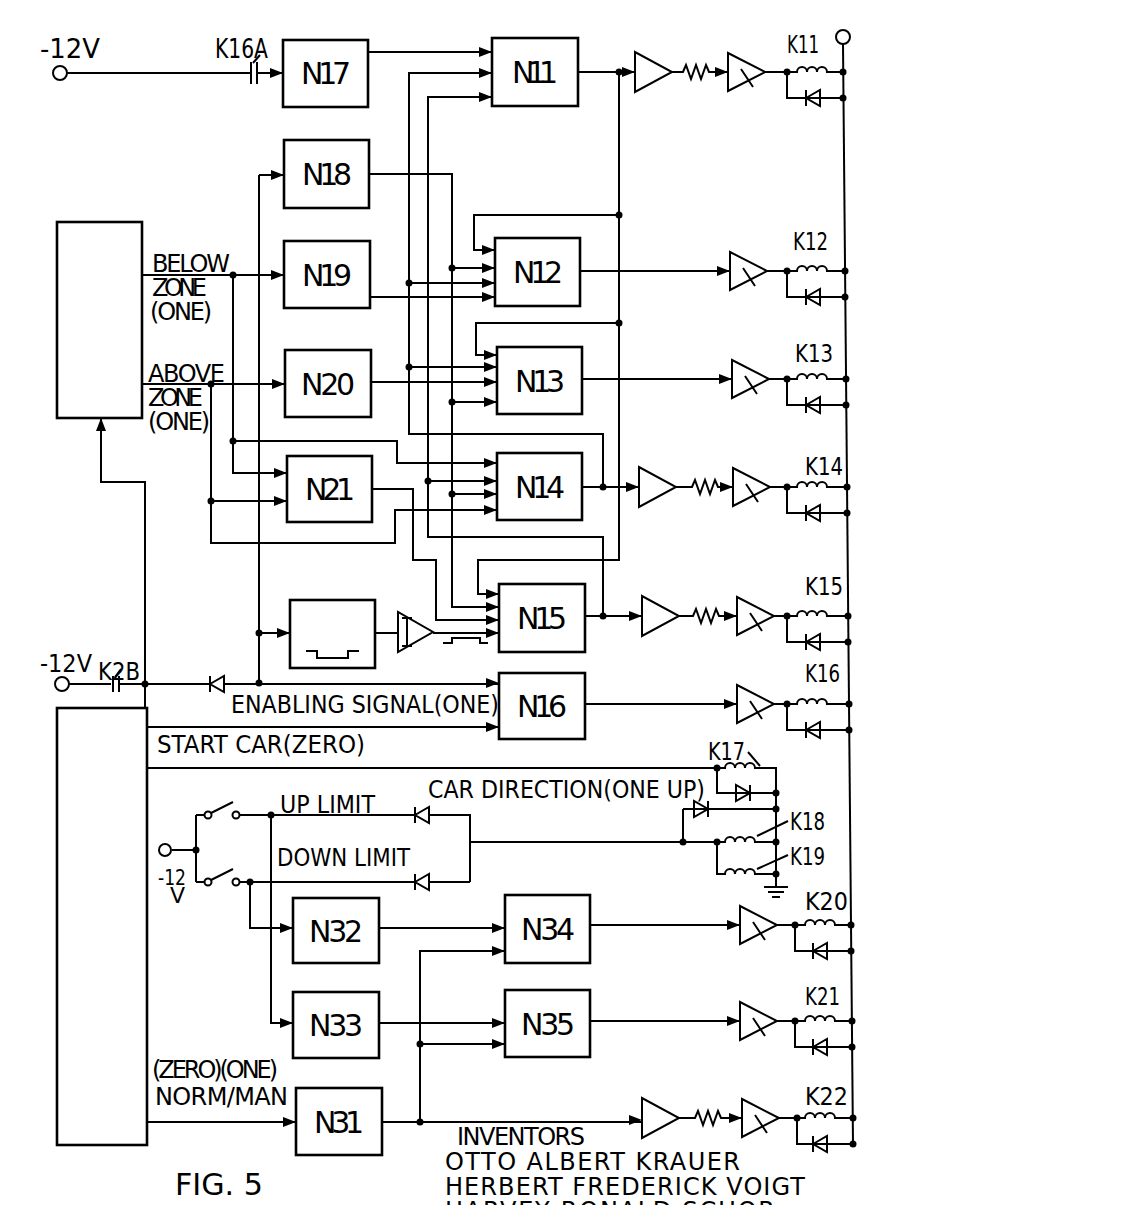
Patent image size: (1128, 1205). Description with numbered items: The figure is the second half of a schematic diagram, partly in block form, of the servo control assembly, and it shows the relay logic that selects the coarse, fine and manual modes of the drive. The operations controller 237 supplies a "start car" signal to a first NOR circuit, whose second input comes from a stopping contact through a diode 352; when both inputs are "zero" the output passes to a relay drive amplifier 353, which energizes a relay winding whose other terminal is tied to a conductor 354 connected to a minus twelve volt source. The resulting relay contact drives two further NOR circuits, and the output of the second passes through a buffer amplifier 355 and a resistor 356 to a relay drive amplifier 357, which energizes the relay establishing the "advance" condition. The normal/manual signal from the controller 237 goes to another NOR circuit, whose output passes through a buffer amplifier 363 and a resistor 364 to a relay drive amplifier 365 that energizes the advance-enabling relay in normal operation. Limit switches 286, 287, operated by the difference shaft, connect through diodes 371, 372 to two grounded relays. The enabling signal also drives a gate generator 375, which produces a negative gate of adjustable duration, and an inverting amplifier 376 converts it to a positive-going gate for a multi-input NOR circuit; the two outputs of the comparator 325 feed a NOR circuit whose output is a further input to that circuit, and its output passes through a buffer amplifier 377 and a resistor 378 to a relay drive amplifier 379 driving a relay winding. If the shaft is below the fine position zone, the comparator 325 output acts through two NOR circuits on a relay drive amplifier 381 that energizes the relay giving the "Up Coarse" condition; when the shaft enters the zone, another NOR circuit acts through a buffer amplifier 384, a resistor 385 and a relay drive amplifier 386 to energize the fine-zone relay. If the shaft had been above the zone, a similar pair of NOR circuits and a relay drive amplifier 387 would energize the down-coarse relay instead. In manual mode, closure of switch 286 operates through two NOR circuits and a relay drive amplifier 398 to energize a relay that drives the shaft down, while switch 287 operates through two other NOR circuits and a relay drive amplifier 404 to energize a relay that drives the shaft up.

The operations controller 237 is at (118, 962).
The limit switch 286 is at (221, 813).
The limit switch 287 is at (229, 884).
The comparator 325 is at (118, 372).
The diode 352 is at (219, 677).
The relay drive amplifier 353 is at (738, 699).
The conductor 354 is at (844, 176).
The buffer amplifier 355 is at (640, 56).
The resistor 356 is at (692, 63).
The relay drive amplifier 357 is at (746, 40).
The buffer amplifier 363 is at (646, 1105).
The resistor 364 is at (701, 1112).
The relay drive amplifier 365 is at (743, 1104).
The diode 371 is at (432, 814).
The diode 372 is at (427, 880).
The gate generator 375 is at (350, 601).
The inverting amplifier 376 is at (413, 616).
The buffer amplifier 377 is at (646, 601).
The resistor 378 is at (708, 607).
The relay drive amplifier 379 is at (751, 606).
The relay drive amplifier 381 is at (736, 263).
The buffer amplifier 384 is at (660, 462).
The resistor 385 is at (706, 480).
The relay drive amplifier 386 is at (755, 482).
The relay drive amplifier 387 is at (737, 371).
The relay drive amplifier 398 is at (741, 1013).
The relay drive amplifier 404 is at (740, 919).